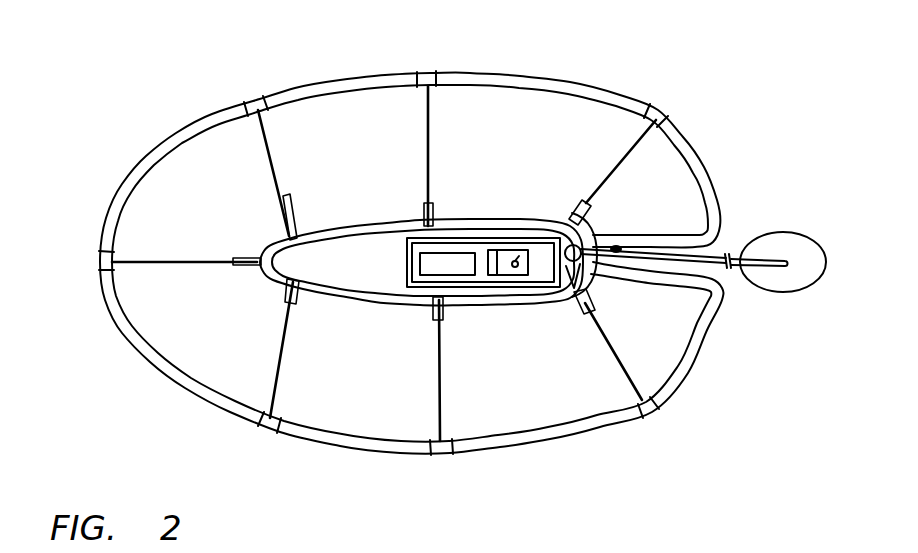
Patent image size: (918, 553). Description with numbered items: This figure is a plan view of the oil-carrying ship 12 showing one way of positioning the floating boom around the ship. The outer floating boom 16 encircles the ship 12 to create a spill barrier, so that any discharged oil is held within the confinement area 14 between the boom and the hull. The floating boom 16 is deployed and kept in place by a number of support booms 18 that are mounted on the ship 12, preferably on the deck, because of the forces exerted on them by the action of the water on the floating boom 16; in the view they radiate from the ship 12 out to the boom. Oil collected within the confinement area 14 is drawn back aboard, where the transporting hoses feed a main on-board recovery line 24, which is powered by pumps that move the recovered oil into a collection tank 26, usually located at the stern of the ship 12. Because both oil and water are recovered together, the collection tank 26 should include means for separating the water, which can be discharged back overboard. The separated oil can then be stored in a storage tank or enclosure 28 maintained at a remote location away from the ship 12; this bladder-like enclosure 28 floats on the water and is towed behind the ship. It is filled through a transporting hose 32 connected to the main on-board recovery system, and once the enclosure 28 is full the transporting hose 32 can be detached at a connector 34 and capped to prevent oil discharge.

The oil-carrying ship 12 is at (340, 291).
The confinement area 14 is at (207, 369).
The outer floating boom 16 is at (369, 72).
The support booms 18 is at (276, 174).
The main on-board recovery line 24 is at (486, 226).
The collection tank 26 is at (565, 289).
The storage tank or enclosure 28 is at (782, 238).
The transporting hose 32 is at (777, 268).
The connector 34 is at (617, 245).